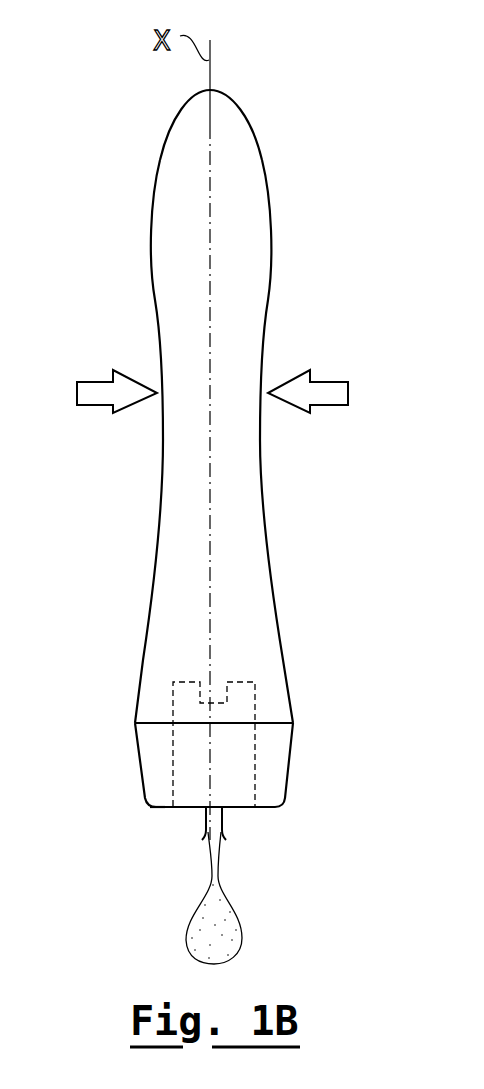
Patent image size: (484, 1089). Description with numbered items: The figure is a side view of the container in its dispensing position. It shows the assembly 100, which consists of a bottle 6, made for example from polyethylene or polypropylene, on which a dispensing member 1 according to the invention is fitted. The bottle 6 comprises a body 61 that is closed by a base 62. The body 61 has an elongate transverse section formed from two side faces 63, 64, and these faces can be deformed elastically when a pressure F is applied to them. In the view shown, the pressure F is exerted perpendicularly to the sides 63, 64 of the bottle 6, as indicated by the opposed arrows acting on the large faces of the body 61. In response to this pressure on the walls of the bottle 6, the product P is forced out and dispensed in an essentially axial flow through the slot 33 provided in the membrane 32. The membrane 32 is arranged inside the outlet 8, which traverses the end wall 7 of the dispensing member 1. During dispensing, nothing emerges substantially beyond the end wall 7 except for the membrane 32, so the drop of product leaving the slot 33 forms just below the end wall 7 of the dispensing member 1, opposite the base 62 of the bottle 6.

The assembly 100 is at (102, 249).
The base 62 is at (227, 91).
The side face 63 is at (159, 314).
The body 61 is at (160, 511).
The bottle 6 is at (275, 346).
The side face 64 is at (268, 532).
The dispensing member 1 is at (302, 758).
The end wall 7 is at (157, 808).
The outlet 8 is at (225, 812).
The membrane 32 is at (229, 823).
The slot 33 is at (208, 840).